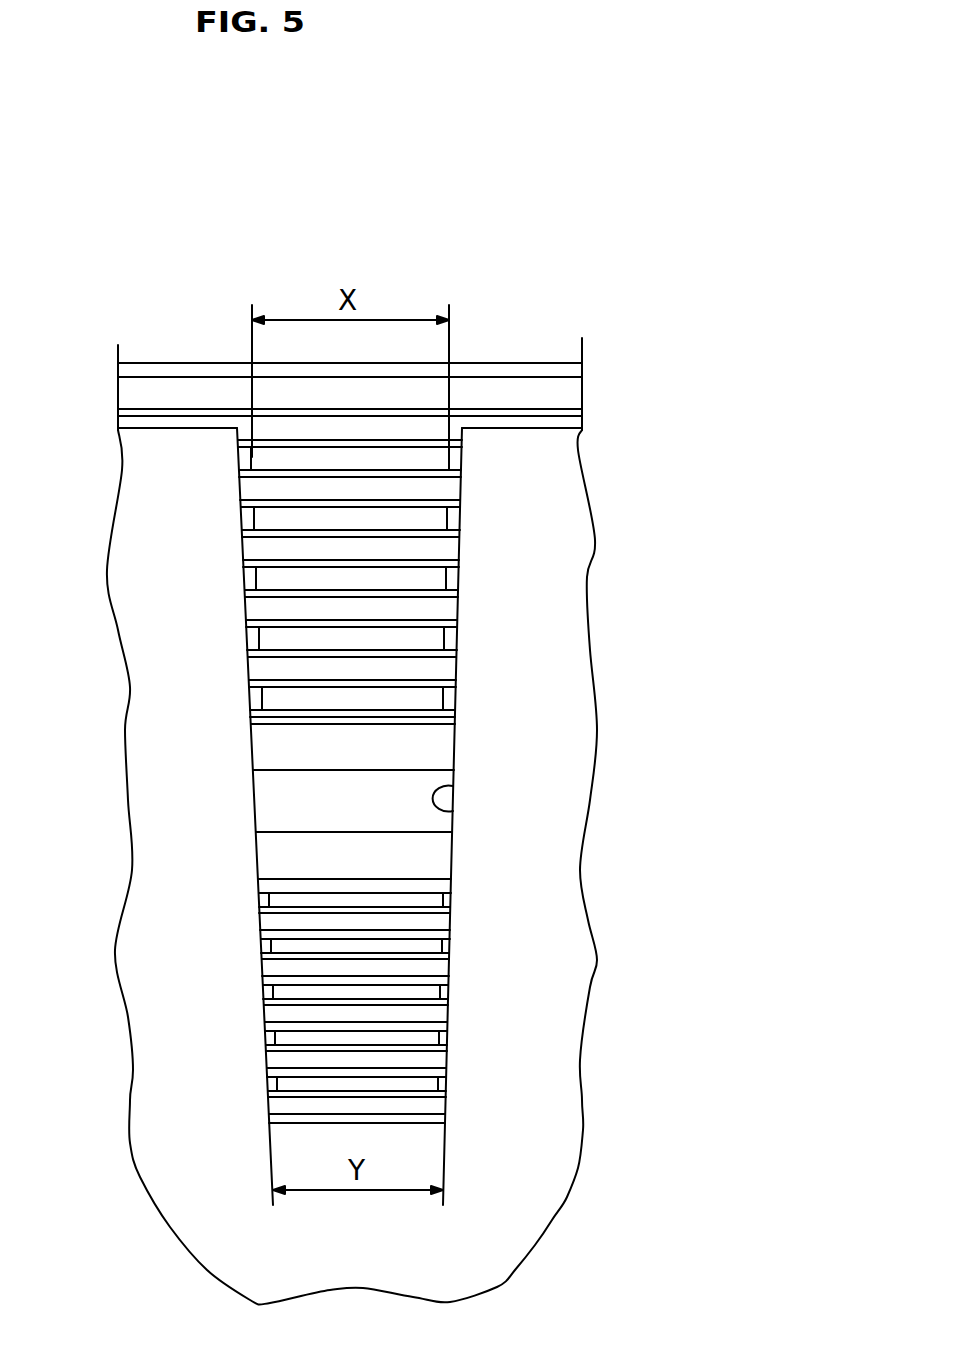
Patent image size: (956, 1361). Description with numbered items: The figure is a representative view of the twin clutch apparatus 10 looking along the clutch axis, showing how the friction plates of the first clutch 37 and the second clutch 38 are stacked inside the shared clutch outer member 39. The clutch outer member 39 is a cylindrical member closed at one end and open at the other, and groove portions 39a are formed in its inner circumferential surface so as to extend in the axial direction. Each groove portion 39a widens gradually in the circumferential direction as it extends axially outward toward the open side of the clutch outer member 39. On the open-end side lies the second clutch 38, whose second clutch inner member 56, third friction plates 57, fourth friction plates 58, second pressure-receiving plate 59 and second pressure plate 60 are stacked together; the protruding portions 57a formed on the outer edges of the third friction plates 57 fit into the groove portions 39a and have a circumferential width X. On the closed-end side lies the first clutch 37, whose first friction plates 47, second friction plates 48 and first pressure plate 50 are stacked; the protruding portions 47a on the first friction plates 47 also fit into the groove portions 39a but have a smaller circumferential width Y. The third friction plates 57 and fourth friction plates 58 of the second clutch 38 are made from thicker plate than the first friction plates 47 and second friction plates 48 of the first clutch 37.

The twin clutch apparatus 10 is at (175, 363).
The first clutch 37 is at (425, 852).
The second clutch 38 is at (425, 745).
The clutch outer member 39 is at (215, 1170).
The groove portions 39a is at (458, 786).
The first friction plates 47 is at (445, 1082).
The protruding portions 47a is at (409, 1090).
The second friction plates 48 is at (270, 1108).
The first pressure plate 50 is at (275, 858).
The second clutch inner member 56 is at (546, 360).
The third friction plates 57 is at (458, 693).
The protruding portions 57a is at (398, 457).
The fourth friction plates 58 is at (257, 668).
The second pressure-receiving plate 59 is at (563, 426).
The second pressure plate 60 is at (275, 750).